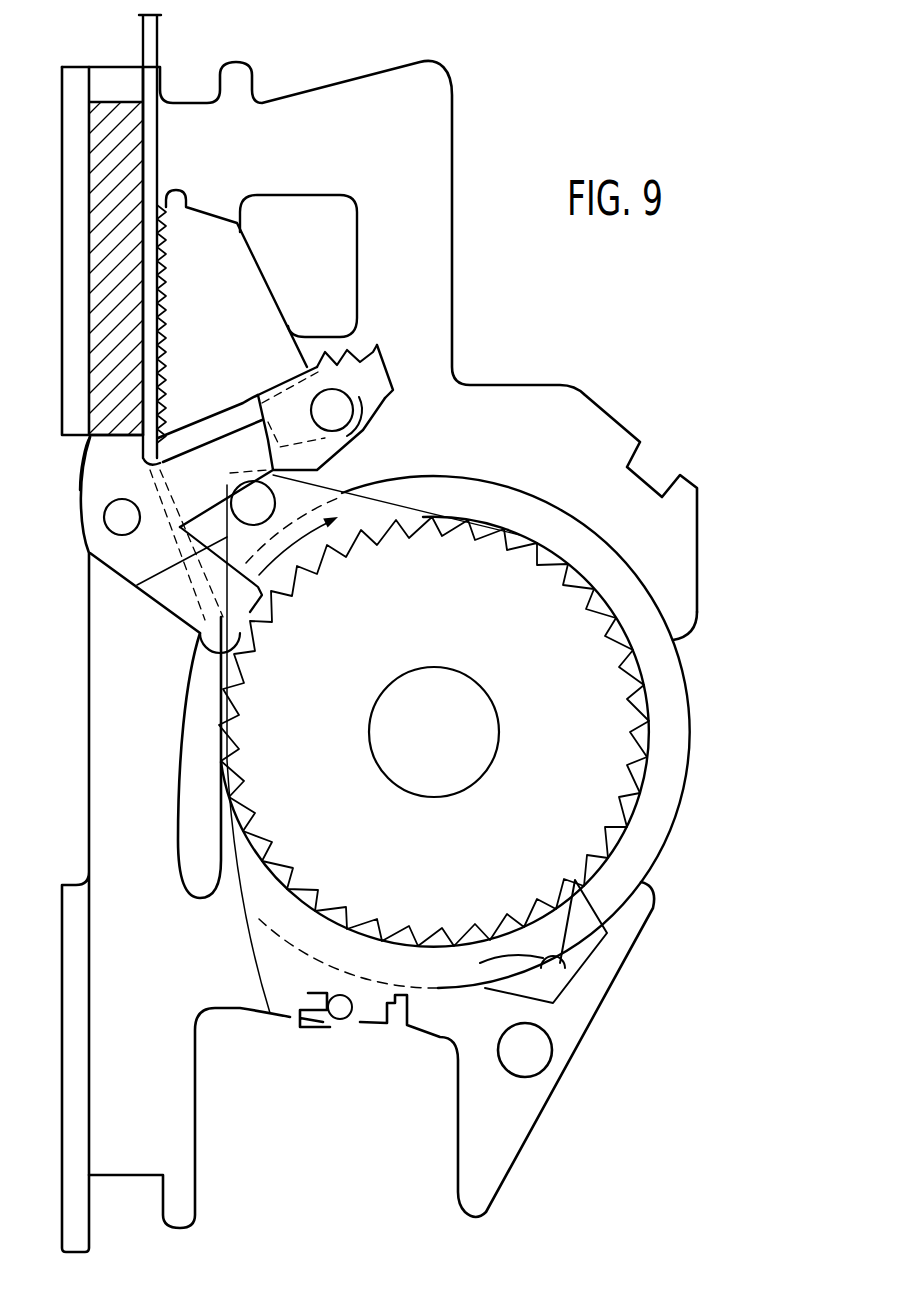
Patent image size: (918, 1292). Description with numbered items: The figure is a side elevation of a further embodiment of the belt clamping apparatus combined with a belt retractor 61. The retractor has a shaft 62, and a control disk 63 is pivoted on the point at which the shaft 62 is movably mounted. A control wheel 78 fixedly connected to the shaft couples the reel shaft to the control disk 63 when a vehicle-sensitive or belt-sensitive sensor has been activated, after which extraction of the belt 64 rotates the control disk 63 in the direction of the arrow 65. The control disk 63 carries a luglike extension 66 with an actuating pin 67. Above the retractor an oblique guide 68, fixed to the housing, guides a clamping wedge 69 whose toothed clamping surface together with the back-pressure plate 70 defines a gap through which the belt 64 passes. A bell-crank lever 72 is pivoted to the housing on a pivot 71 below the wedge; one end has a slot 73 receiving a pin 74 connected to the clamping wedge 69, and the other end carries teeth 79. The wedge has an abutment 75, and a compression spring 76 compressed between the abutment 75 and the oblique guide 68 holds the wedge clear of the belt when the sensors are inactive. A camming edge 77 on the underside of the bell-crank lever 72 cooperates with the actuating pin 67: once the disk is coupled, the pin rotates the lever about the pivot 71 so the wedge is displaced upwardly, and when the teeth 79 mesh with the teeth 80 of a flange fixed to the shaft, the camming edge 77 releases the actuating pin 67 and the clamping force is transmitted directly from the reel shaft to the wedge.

The belt retractor 61 is at (712, 700).
The shaft 62 is at (440, 723).
The control disk 63 is at (390, 518).
The belt 64 is at (160, 27).
The arrow 65 is at (293, 549).
The luglike extension 66 is at (150, 574).
The actuating pin 67 is at (230, 503).
The oblique guide 68 is at (267, 267).
The clamping wedge 69 is at (210, 240).
The back-pressure plate 70 is at (122, 197).
The pivot 71 is at (104, 517).
The bell-crank lever 72 is at (123, 483).
The slot 73 is at (373, 365).
The pin 74 is at (337, 413).
The abutment 75 is at (385, 353).
The compression spring 76 is at (363, 323).
The camming edge 77 is at (200, 422).
The control wheel 78 is at (604, 783).
The teeth 79 is at (192, 633).
The teeth 80 is at (673, 645).